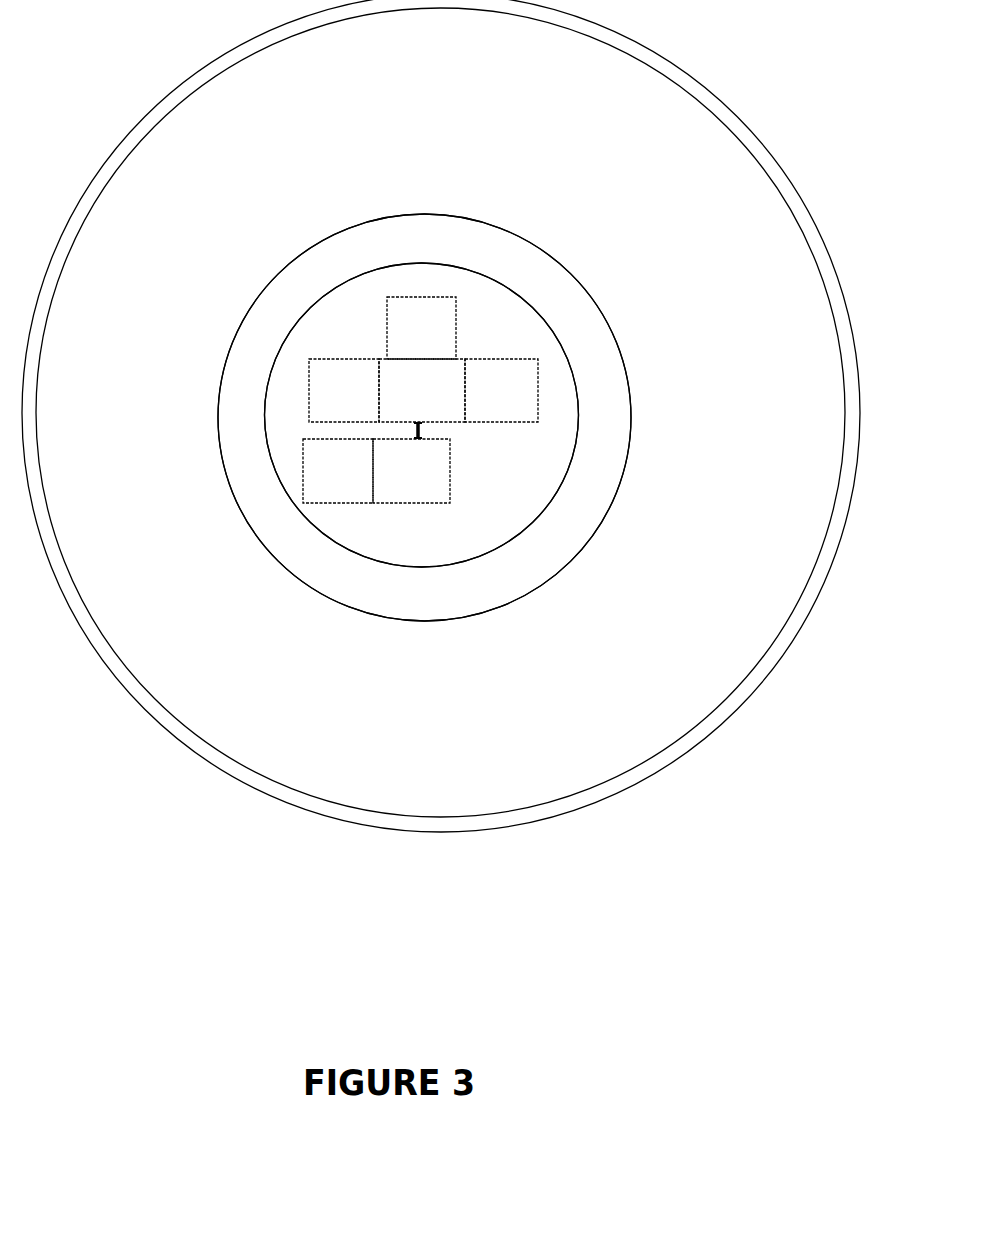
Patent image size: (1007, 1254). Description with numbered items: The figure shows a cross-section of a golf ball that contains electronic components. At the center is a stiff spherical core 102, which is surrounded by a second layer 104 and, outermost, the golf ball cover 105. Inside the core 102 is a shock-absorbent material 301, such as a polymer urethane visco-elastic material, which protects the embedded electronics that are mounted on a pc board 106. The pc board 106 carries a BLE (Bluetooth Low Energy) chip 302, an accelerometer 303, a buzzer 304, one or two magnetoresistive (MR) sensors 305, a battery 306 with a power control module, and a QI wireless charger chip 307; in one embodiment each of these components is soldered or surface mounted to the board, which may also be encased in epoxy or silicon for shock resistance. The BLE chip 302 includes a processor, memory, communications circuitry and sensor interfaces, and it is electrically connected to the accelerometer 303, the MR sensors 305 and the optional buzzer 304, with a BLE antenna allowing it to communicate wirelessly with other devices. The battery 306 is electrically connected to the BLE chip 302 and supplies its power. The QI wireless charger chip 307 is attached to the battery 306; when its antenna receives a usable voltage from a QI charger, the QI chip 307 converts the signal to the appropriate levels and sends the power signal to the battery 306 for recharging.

The stiff spherical core 102 is at (617, 333).
The second layer 104 is at (442, 96).
The golf ball cover 105 is at (698, 67).
The pc board 106 is at (508, 526).
The shock-absorbent material 301 is at (432, 256).
The BLE chip 302 is at (431, 396).
The accelerometer 303 is at (361, 396).
The buzzer 304 is at (518, 396).
The magnetoresistive (MR) sensors 305 is at (437, 332).
The battery 306 is at (426, 476).
The QI wireless charger chip 307 is at (353, 476).